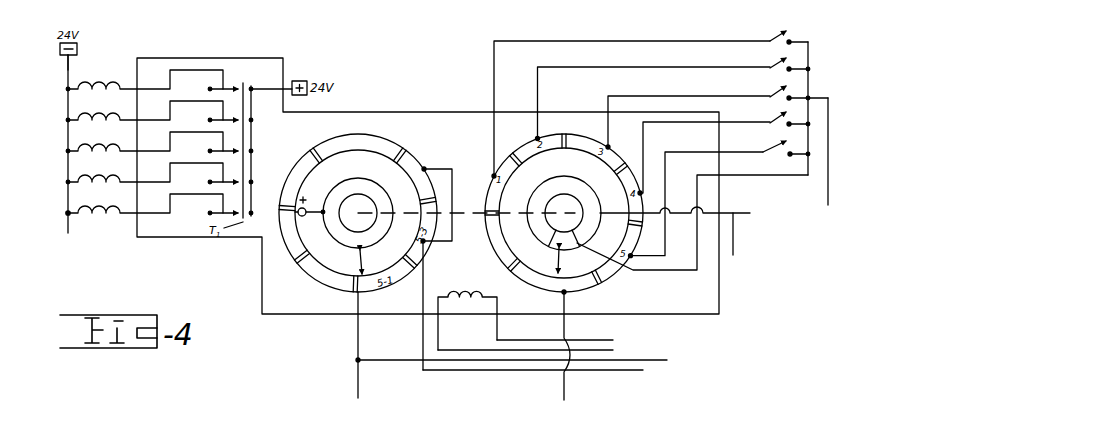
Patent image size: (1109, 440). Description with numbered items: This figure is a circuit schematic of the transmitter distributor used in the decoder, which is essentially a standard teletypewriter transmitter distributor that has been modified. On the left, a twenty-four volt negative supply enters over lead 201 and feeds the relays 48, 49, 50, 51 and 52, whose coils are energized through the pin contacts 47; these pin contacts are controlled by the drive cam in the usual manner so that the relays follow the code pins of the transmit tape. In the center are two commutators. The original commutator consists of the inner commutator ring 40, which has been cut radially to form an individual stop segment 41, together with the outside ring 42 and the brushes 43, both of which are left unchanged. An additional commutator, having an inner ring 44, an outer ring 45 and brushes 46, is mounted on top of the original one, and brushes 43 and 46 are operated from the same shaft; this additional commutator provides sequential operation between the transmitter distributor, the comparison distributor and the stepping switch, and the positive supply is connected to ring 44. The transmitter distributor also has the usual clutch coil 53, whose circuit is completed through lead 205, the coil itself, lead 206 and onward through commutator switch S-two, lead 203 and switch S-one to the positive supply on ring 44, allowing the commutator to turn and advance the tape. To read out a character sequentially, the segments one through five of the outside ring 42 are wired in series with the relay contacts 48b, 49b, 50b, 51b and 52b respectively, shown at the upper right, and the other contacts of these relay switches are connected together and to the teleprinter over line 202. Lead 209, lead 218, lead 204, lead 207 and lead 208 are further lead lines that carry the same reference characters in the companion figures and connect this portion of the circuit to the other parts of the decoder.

The lead line 201 is at (70, 63).
The relay 48 is at (100, 79).
The relay 49 is at (108, 102).
The relay 50 is at (108, 133).
The relay 51 is at (108, 164).
The relay 52 is at (108, 195).
The pin contacts 47 is at (243, 83).
The outer ring 45 is at (387, 138).
The inner ring 44 is at (353, 178).
The brushes 46 is at (361, 261).
The clutch coil 53 is at (468, 288).
The inner commutator ring 40 is at (574, 182).
The stop segment 41 is at (550, 241).
The outside ring 42 is at (541, 288).
The brushes 43 is at (560, 257).
The relay contact 48b is at (774, 36).
The relay contact 49b is at (774, 63).
The relay contact 50b is at (774, 90).
The relay contact 51b is at (774, 116).
The relay contact 52b is at (783, 146).
The line 202 is at (827, 187).
The lead line 209 is at (748, 208).
The lead line 218 is at (735, 238).
The lead 203 is at (362, 378).
The lead line 204 is at (567, 388).
The lead 205 is at (597, 338).
The lead 206 is at (613, 352).
The lead line 207 is at (648, 362).
The lead line 208 is at (627, 373).